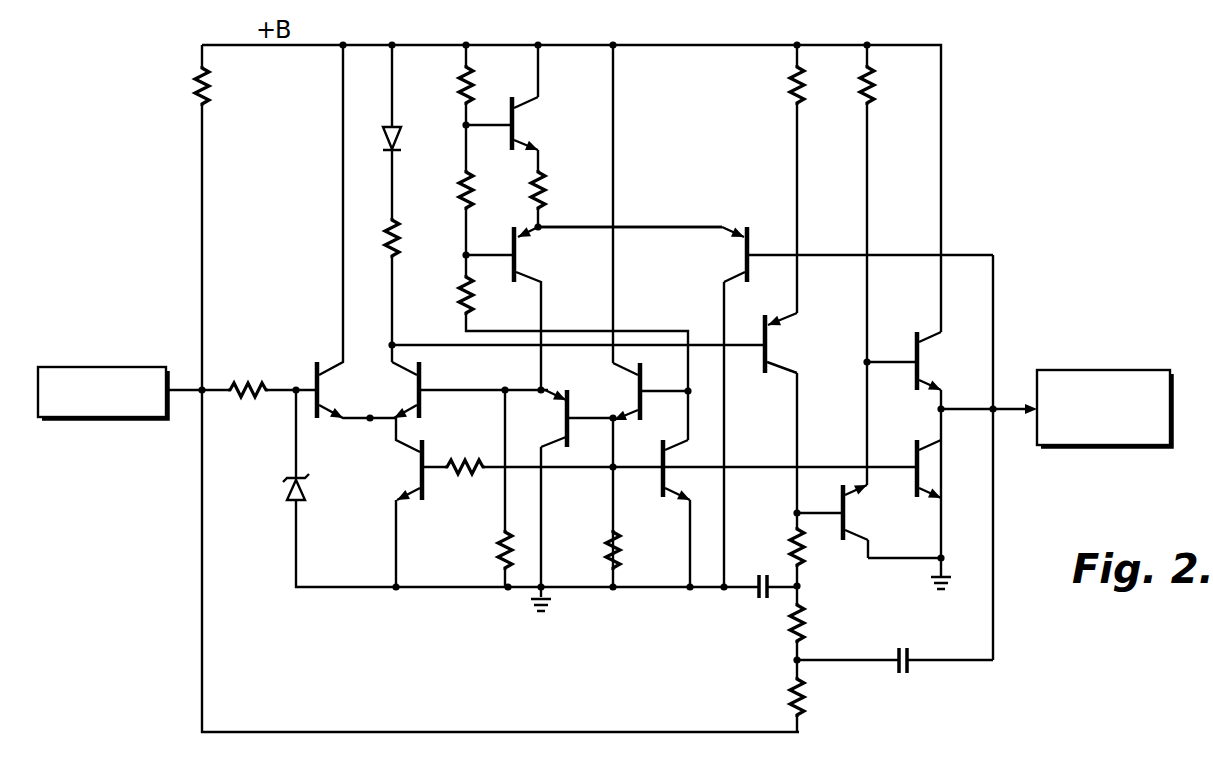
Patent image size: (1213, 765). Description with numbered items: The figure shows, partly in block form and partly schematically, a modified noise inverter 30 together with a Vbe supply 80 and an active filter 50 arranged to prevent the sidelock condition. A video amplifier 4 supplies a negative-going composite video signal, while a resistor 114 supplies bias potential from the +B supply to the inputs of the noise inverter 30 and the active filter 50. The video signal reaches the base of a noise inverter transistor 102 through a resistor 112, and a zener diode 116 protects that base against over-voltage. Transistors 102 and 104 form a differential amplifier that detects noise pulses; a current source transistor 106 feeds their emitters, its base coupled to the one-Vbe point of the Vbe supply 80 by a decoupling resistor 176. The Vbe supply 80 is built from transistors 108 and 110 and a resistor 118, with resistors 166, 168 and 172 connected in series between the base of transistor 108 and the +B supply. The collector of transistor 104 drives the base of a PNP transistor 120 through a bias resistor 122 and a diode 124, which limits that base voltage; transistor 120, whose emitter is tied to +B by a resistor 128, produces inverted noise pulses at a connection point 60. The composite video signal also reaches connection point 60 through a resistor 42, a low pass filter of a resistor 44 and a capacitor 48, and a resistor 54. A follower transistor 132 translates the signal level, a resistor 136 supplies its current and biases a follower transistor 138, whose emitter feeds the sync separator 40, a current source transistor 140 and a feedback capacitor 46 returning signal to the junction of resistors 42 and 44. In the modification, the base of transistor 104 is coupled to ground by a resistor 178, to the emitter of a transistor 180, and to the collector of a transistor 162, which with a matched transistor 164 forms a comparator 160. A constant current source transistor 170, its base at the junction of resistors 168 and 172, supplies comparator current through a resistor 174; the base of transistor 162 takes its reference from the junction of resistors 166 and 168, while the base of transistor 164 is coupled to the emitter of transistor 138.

The video amplifier 4 is at (100, 367).
The sync separator 40 is at (1101, 370).
The noise inverter 30 is at (384, 345).
The active filter 50 is at (853, 605).
The connection point 60 is at (796, 512).
The Vbe supply 80 is at (650, 466).
The comparator 160 is at (672, 270).
The resistor 42 is at (791, 707).
The resistor 44 is at (790, 640).
The feedback capacitor 46 is at (903, 646).
The capacitor 48 is at (760, 574).
The resistor 54 is at (790, 545).
The noise inverter transistor 102 is at (328, 387).
The noise inverter transistor 104 is at (419, 395).
The current source transistor 106 is at (420, 471).
The transistor 108 is at (638, 390).
The transistor 110 is at (663, 484).
The resistor 112 is at (240, 386).
The resistor 114 is at (212, 80).
The zener diode 116 is at (291, 495).
The resistor 118 is at (622, 552).
The PNP transistor 120 is at (779, 348).
The bias resistor 122 is at (398, 238).
The diode 124 is at (395, 135).
The resistor 128 is at (788, 92).
The follower transistor 132 is at (854, 516).
The resistor 136 is at (872, 95).
The follower transistor 138 is at (919, 360).
The current source transistor 140 is at (919, 471).
The transistor 162 is at (518, 262).
The matched transistor 164 is at (745, 257).
The resistor 166 is at (475, 296).
The resistor 168 is at (458, 190).
The constant current source transistor 170 is at (514, 128).
The resistor 172 is at (458, 82).
The resistor 174 is at (545, 183).
The decoupling resistor 176 is at (468, 461).
The resistor 178 is at (500, 550).
The transistor 180 is at (567, 438).